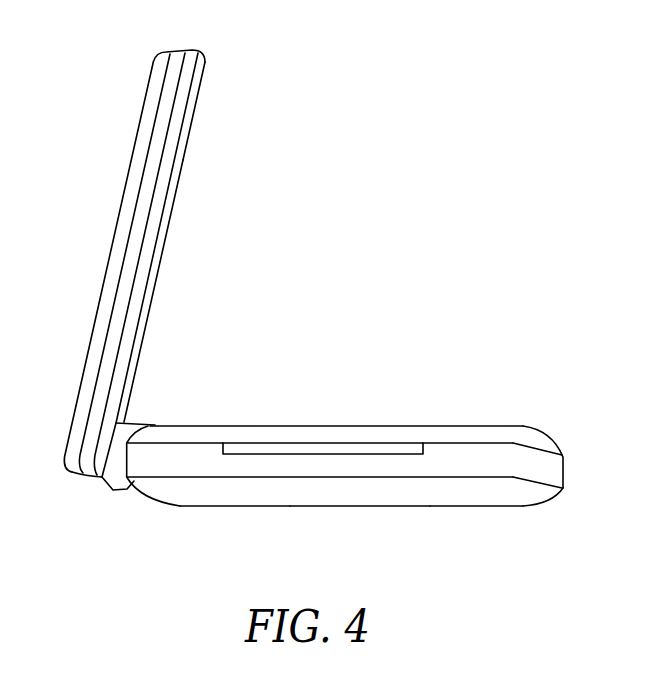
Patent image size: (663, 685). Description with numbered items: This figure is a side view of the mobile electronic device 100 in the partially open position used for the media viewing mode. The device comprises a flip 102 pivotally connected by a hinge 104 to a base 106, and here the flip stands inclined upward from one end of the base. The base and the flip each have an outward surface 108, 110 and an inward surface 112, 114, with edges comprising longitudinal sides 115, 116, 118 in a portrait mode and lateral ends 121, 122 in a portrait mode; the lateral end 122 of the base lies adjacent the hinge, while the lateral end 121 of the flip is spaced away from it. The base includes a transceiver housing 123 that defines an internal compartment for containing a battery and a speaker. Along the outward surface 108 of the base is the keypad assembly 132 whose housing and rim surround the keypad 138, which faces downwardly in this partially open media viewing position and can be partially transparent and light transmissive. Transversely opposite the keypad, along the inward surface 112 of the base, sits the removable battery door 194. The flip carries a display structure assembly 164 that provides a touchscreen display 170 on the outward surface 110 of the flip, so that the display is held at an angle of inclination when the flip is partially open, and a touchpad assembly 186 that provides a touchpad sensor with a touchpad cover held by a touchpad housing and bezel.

The mobile electronic device 100 is at (499, 184).
The flip 102 is at (173, 50).
The hinge 104 is at (112, 482).
The base 106 is at (563, 472).
The outward surface 108 is at (505, 506).
The outward surface 110 is at (141, 115).
The inward surface 112 is at (477, 425).
The inward surface 114 is at (197, 99).
The longitudinal side 115 is at (560, 490).
The longitudinal side 116 is at (80, 477).
The longitudinal side 118 is at (165, 148).
The lateral end 121 is at (123, 262).
The lateral end 122 is at (183, 443).
The transceiver housing 123 is at (135, 480).
The keypad assembly 132 is at (226, 506).
The keypad 138 is at (346, 506).
The display structure assembly 164 is at (155, 61).
The touchscreen display 170 is at (96, 317).
The touchpad assembly 186 is at (171, 220).
The removable battery door 194 is at (318, 426).